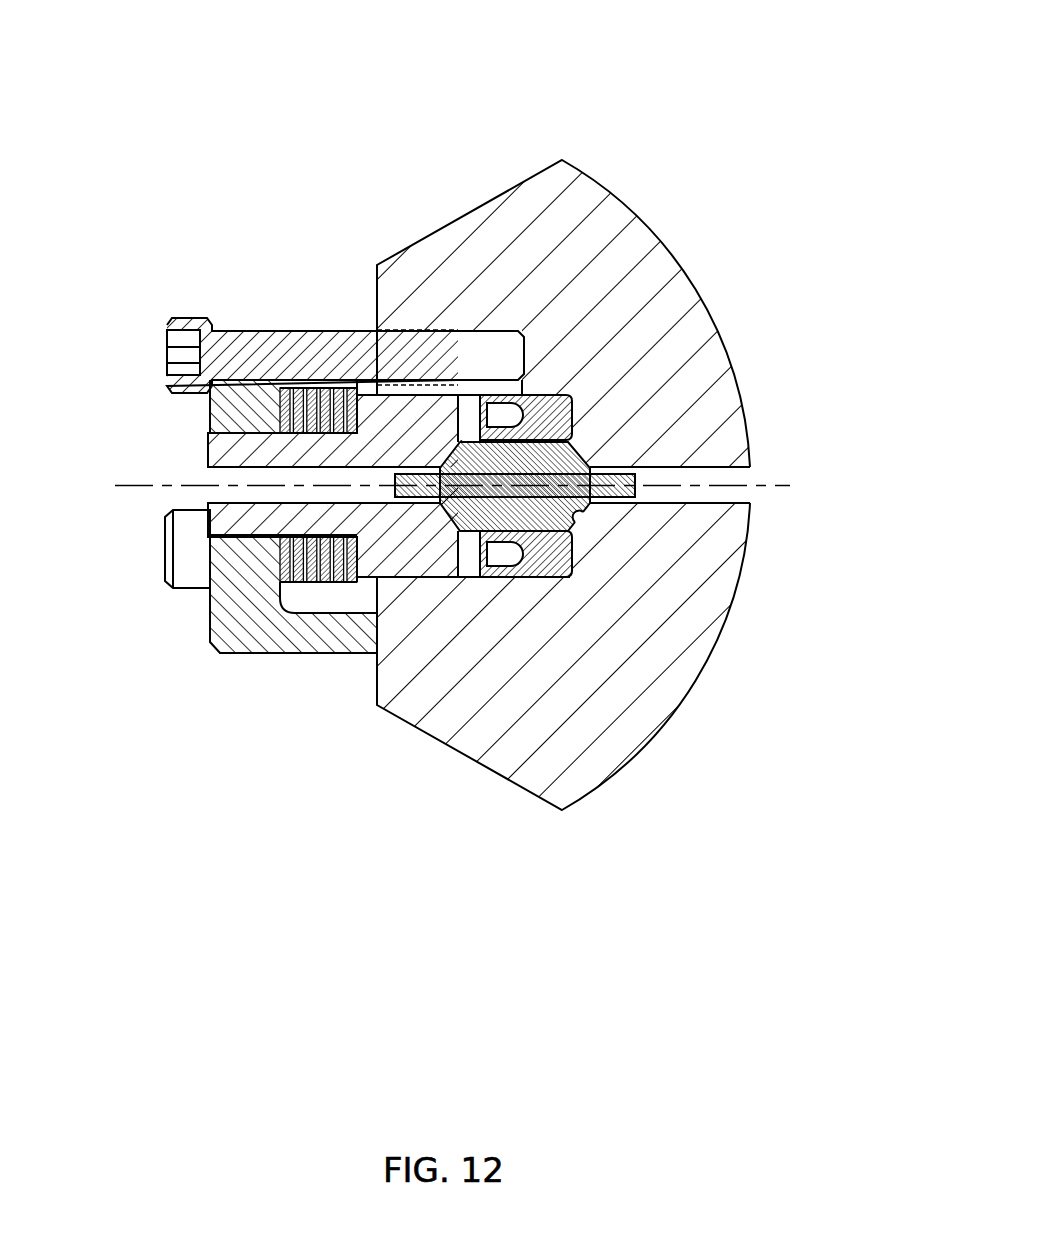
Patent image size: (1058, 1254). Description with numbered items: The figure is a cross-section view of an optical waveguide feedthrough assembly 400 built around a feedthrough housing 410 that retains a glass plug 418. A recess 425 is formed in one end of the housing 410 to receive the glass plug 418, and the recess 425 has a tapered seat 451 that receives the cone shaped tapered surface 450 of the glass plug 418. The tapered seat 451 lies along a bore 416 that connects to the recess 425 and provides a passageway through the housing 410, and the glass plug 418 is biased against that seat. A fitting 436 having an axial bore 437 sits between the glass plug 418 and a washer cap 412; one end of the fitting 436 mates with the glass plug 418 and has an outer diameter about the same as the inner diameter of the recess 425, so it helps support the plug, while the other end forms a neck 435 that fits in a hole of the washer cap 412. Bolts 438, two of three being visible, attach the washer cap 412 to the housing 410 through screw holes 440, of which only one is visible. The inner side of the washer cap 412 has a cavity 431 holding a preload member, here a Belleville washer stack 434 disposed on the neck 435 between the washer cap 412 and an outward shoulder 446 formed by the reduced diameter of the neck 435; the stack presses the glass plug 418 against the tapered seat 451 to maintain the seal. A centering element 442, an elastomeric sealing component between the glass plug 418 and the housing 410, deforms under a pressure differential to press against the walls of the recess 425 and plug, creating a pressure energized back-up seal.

The feedthrough assembly 400 is at (528, 88).
The feedthrough housing 410 is at (487, 768).
The washer cap 412 is at (213, 475).
The bore 416 is at (710, 467).
The glass plug 418 is at (578, 462).
The recess 425 is at (474, 416).
The cavity 431 is at (322, 602).
The Belleville washer stack 434 is at (281, 375).
The neck 435 is at (210, 618).
The fitting 436 is at (204, 542).
The axial bore 437 is at (222, 469).
The bolts 438 is at (167, 323).
The screw holes 440 is at (502, 338).
The centering element 442 is at (567, 575).
The outward shoulder 446 is at (332, 386).
The tapered surface 450 is at (598, 518).
The tapered seat 451 is at (576, 512).